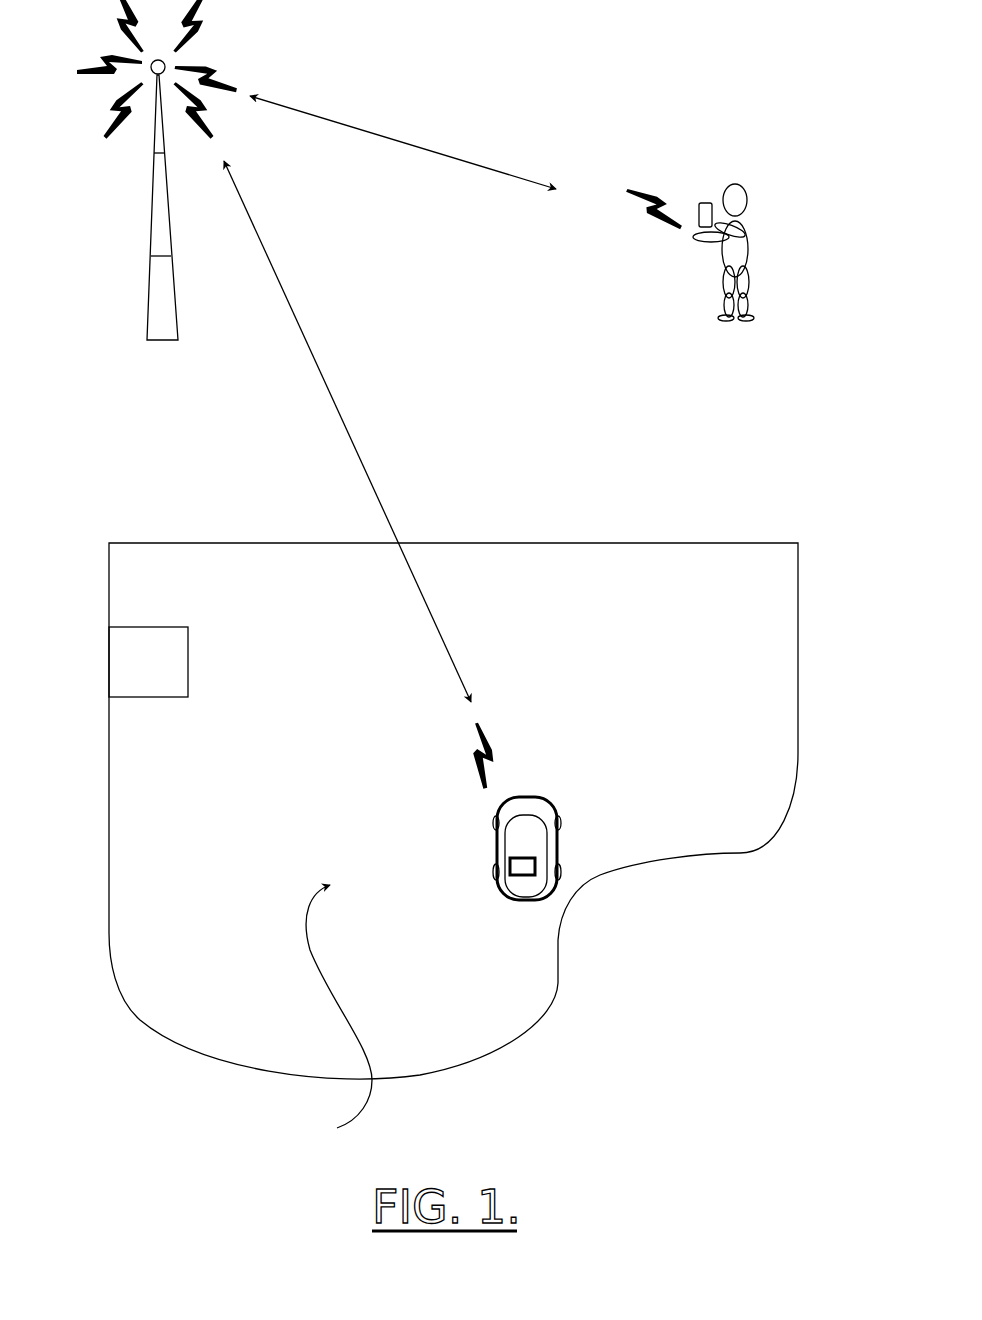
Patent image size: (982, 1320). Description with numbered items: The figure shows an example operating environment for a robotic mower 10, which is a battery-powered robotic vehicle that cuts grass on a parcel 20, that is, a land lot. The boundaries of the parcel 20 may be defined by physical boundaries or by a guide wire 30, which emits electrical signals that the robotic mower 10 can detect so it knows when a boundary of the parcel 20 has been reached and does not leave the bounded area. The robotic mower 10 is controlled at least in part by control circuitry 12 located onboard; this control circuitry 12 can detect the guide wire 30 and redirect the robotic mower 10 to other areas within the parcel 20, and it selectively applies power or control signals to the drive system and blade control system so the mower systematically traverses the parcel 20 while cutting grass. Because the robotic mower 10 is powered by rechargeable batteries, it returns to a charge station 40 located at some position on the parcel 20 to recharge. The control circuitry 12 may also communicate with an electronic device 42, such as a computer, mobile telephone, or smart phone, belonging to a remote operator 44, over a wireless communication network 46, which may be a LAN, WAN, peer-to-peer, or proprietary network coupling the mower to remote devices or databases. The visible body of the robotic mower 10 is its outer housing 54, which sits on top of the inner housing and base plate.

The robotic mower 10 is at (582, 827).
The control circuitry 12 is at (528, 853).
The parcel 20 is at (334, 1016).
The guide wire 30 is at (560, 987).
The charge station 40 is at (133, 658).
The electronic device 42 is at (707, 189).
The remote operator 44 is at (776, 187).
The wireless communication network 46 is at (296, 289).
The outer housing 54 is at (523, 796).